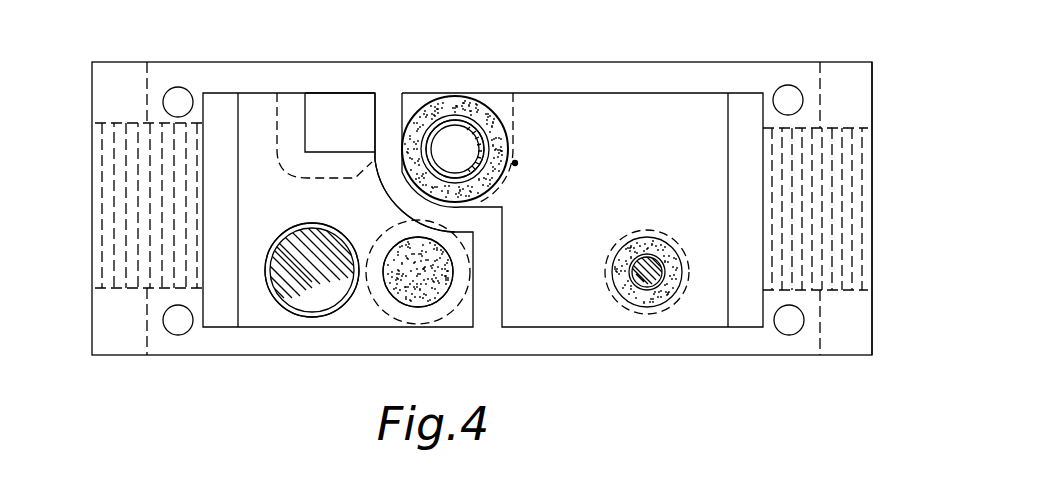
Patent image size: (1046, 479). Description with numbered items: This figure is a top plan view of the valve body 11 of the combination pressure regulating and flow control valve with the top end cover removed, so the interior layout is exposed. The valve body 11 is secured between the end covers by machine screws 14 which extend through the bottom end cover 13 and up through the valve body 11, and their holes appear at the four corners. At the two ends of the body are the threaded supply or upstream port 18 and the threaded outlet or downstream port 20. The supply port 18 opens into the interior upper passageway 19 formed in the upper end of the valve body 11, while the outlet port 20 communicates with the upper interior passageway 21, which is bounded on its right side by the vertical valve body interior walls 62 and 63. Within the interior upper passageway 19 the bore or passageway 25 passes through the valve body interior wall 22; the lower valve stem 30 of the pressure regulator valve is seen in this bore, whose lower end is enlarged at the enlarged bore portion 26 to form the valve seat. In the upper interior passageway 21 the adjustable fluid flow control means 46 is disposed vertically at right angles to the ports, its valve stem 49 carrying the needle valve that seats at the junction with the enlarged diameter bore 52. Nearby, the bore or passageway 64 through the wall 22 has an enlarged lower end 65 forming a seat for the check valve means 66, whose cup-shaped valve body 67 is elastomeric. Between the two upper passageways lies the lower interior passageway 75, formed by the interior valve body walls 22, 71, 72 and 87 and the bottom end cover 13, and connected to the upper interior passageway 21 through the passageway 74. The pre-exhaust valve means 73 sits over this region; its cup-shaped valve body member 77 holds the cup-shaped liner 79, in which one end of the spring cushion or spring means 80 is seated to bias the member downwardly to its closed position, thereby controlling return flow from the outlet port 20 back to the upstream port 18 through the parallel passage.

The valve body 11 is at (220, 80).
The bottom end cover 13 is at (825, 102).
The machine screws 14 is at (172, 88).
The supply or upstream port 18 is at (852, 290).
The interior upper passageway 19 is at (627, 100).
The outlet or downstream port 20 is at (113, 290).
The upper interior passageway 21 is at (253, 97).
The valve body interior wall 22 is at (678, 105).
The bore or passageway 25 is at (660, 243).
The enlarged bore portion 26 is at (623, 299).
The lower valve stem 30 is at (648, 257).
The adjustable fluid flow control means 46 is at (293, 312).
The valve stem 49 is at (298, 248).
The enlarged diameter bore 52 is at (340, 248).
The vertical valve body interior wall 62 is at (388, 152).
The vertical valve body interior wall 63 is at (487, 226).
The bore or passageway 64 is at (450, 265).
The enlarged lower end of bore 65 is at (470, 307).
The check valve means 66 is at (403, 293).
The cup-shaped valve body 67 is at (440, 278).
The interior valve body wall 71 is at (512, 113).
The interior valve body wall 72 is at (362, 178).
The pre-exhaust valve means 73 is at (518, 163).
The passageway 74 is at (340, 97).
The lower interior passageway 75 is at (360, 97).
The cup-shaped valve body member 77 is at (500, 143).
The cup-shaped liner 79 is at (455, 118).
The spring cushion or spring means 80 is at (456, 149).
The interior valve body wall 87 is at (292, 127).